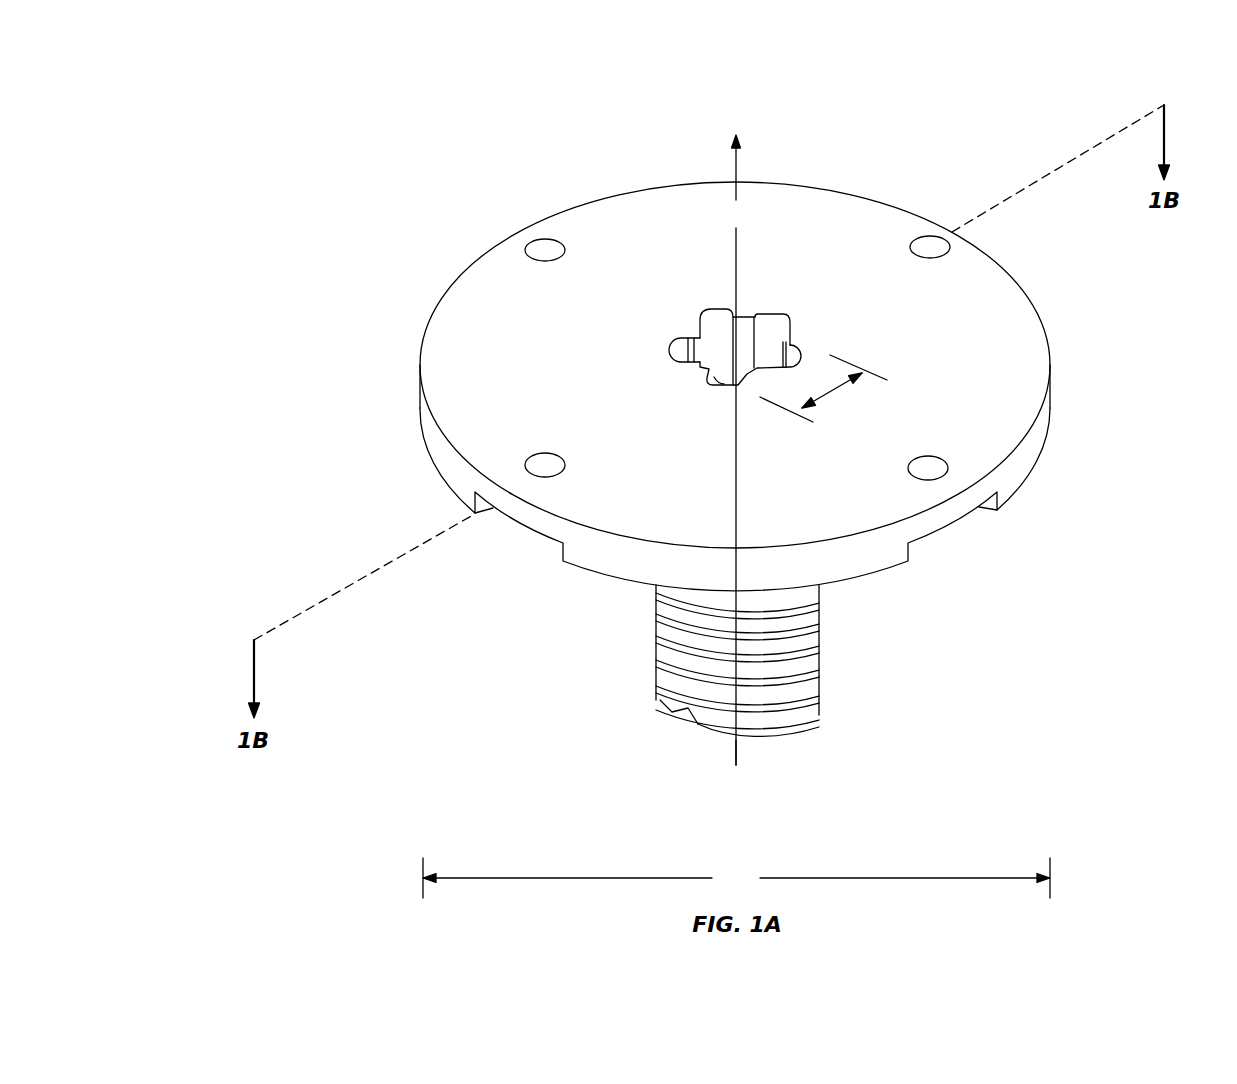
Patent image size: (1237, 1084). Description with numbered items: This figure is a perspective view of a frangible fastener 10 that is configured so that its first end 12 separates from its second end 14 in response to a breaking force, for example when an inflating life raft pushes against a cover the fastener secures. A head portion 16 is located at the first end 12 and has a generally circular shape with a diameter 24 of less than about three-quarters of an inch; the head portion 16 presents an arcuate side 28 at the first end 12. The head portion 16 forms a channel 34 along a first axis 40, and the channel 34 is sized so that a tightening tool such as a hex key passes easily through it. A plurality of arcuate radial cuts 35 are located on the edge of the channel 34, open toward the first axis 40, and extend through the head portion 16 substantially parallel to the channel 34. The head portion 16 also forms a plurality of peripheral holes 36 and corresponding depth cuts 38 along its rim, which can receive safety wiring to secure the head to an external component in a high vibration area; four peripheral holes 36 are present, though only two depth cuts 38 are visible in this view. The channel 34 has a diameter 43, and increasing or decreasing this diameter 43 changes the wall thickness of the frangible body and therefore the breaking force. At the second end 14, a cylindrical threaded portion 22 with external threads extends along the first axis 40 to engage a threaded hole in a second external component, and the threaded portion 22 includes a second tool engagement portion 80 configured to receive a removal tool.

The frangible fastener 10 is at (462, 182).
The first end 12 is at (735, 122).
The second end 14 is at (735, 773).
The head portion 16 is at (486, 362).
The threaded portion 22 is at (820, 682).
The diameter 24 is at (736, 878).
The arcuate side 28 is at (1015, 282).
The channel 34 is at (745, 342).
The arcuate radial cuts 35 is at (706, 312).
The peripheral holes 36 is at (545, 261).
The depth cuts 38 is at (501, 552).
The first axis 40 is at (737, 456).
The diameter of channel 43 is at (834, 398).
The second tool engagement portion 80 is at (690, 718).